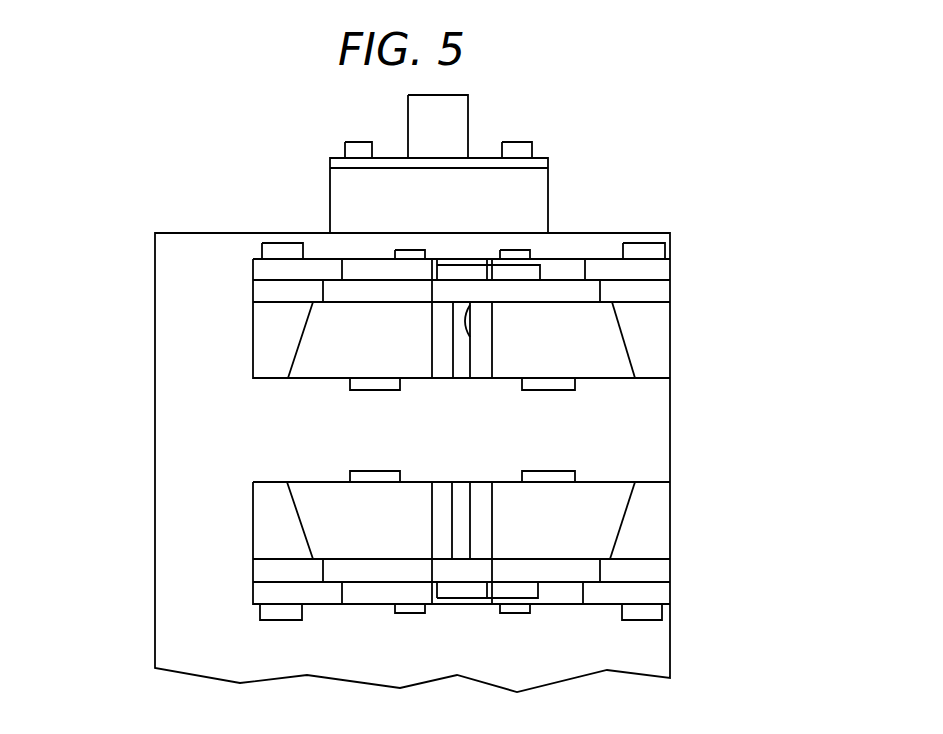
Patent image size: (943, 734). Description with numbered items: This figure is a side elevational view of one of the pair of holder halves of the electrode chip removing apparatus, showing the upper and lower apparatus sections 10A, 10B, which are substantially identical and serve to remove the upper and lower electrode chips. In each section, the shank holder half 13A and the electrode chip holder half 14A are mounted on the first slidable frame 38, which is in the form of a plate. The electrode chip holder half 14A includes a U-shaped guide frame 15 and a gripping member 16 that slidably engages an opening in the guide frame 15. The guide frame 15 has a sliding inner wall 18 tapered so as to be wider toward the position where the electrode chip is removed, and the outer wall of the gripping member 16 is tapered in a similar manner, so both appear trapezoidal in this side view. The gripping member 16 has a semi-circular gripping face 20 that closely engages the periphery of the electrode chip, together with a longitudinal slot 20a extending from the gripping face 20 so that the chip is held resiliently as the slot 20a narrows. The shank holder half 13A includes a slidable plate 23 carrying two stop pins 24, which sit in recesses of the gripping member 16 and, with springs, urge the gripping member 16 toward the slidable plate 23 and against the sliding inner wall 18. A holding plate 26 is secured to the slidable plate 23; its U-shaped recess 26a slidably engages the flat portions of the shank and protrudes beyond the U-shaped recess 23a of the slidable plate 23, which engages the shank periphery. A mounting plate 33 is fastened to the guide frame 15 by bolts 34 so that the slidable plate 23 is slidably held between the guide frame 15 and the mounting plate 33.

The first slidable frame 38 is at (229, 256).
The upper apparatus section 10A is at (252, 345).
The lower apparatus section 10B is at (252, 537).
The slidable plate 23 is at (293, 273).
The holder half 13A is at (352, 258).
The holding plate 26 is at (389, 264).
The U-shaped recess 26a is at (443, 293).
The U-shaped recess 23a is at (460, 303).
The longitudinal slot 20a is at (474, 305).
The semi-circular gripping face 20 is at (485, 327).
The mounting plate 33 is at (608, 257).
The bolts 34 is at (656, 253).
The holder half 14A is at (652, 301).
The U-shaped guide frame 15 is at (653, 348).
The sliding inner wall 18 is at (625, 366).
The gripping member 16 is at (593, 375).
The stop pins 24 is at (575, 466).